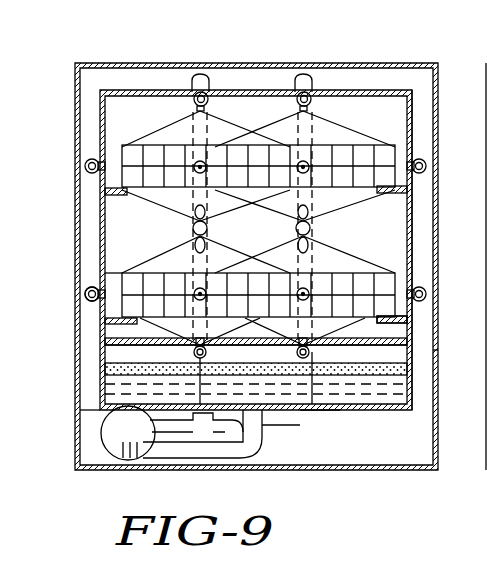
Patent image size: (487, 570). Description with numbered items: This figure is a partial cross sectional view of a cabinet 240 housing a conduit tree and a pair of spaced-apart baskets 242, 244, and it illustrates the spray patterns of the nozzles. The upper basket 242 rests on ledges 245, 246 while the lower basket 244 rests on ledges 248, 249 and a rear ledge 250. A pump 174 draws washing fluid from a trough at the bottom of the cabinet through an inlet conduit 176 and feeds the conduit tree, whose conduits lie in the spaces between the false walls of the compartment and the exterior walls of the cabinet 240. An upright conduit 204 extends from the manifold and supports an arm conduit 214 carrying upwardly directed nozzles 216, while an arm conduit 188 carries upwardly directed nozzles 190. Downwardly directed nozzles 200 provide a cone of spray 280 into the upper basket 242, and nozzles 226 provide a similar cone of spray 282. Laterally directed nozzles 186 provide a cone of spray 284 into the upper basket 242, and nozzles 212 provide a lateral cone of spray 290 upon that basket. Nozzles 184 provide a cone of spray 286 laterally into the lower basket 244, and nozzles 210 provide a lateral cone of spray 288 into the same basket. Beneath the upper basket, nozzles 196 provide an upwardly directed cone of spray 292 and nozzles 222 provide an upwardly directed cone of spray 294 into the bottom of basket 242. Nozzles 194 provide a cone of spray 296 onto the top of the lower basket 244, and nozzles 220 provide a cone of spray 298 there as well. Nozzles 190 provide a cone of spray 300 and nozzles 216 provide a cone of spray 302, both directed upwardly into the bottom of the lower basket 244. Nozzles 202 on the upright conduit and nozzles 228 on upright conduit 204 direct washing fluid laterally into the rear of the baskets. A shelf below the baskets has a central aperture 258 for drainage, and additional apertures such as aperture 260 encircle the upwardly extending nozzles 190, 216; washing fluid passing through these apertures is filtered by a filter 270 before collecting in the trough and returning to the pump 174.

The cabinet 240 is at (74, 68).
The ledge 245 is at (100, 183).
The nozzles 212 is at (412, 143).
The basket 242 is at (157, 193).
The cone of spray 298 is at (408, 193).
The cone of spray 288 is at (409, 258).
The basket 244 is at (208, 283).
The nozzles 228 is at (352, 140).
The nozzles 200 is at (203, 73).
The nozzles 226 is at (314, 98).
The cone of spray 284 is at (122, 147).
The cone of spray 280 is at (178, 120).
The nozzles 202 is at (213, 102).
The cone of spray 282 is at (352, 145).
The cone of spray 290 is at (380, 147).
The nozzles 186 is at (92, 158).
The ledge 246 is at (428, 168).
The nozzles 184 is at (88, 287).
The nozzles 210 is at (427, 290).
The ledge 249 is at (410, 318).
The nozzles 196 is at (208, 228).
The cone of spray 294 is at (310, 229).
The cone of spray 292 is at (290, 212).
The nozzles 194 is at (206, 245).
The cone of spray 296 is at (177, 252).
The nozzles 222 is at (340, 224).
The nozzles 220 is at (395, 232).
The ledge 248 is at (105, 346).
The cone of spray 302 is at (408, 342).
The central aperture 258 is at (185, 331).
The nozzles 216 is at (305, 333).
The arm conduit 188 is at (256, 381).
The upright conduit 204 is at (256, 388).
The arm conduit 214 is at (283, 378).
The cone of spray 300 is at (190, 335).
The nozzles 190 is at (100, 398).
The cone of spray 286 is at (122, 273).
The rear ledge 250 is at (436, 352).
The pump 174 is at (118, 456).
The inlet conduit 176 is at (197, 458).
The aperture 260 is at (343, 402).
The filter 270 is at (368, 410).